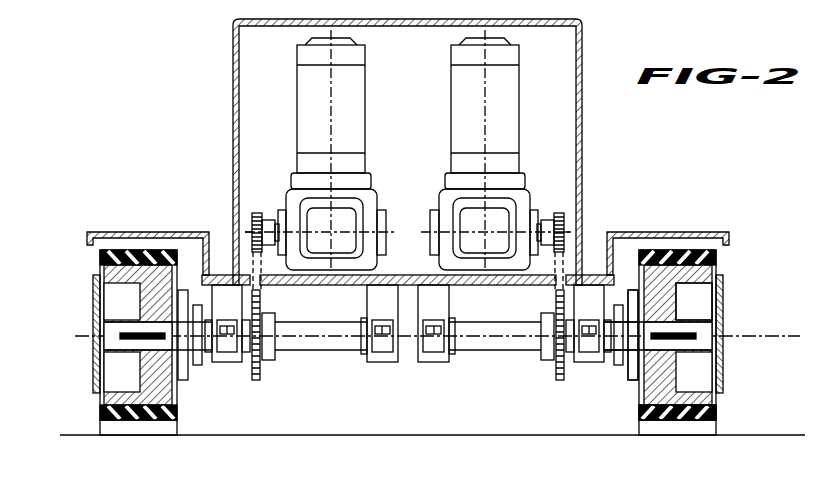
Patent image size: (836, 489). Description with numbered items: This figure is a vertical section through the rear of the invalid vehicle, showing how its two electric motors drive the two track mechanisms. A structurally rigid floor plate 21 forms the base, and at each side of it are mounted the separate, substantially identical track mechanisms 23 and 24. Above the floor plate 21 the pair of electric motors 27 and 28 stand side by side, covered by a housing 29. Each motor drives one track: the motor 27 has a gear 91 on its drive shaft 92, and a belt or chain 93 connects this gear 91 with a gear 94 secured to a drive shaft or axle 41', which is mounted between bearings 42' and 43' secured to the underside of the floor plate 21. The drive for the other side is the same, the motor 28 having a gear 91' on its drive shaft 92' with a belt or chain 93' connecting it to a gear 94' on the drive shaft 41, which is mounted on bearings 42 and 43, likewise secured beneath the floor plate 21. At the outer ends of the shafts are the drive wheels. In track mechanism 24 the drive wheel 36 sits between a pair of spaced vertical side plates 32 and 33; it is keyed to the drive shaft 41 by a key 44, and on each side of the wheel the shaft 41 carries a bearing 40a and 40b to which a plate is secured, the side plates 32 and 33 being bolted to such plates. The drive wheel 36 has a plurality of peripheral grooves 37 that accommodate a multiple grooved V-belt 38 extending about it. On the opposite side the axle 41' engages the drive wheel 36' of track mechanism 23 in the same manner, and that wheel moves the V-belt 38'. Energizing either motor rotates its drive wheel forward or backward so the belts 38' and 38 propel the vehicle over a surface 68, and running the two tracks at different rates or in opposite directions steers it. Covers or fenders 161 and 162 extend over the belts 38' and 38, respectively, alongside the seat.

The floor plate 21 is at (336, 286).
The track mechanism 23 is at (92, 322).
The track mechanism 24 is at (745, 293).
The electric motor 27 is at (297, 116).
The electric motor 28 is at (450, 104).
The housing 29 is at (233, 92).
The side plate 32 is at (636, 400).
The side plate 33 is at (724, 364).
The drive wheel 36 is at (748, 339).
The drive wheel 36' is at (65, 349).
The peripheral grooves 37 is at (676, 430).
The V-belt 38 is at (709, 419).
The V-belt 38' is at (160, 446).
The bearing 40a is at (632, 376).
The bearing 40b is at (706, 306).
The drive shaft 41 is at (495, 355).
The drive shaft or axle 41' is at (321, 355).
The bearing 42 is at (433, 344).
The bearing 42' is at (364, 344).
The bearing 43 is at (588, 344).
The bearing 43' is at (221, 351).
The key 44 is at (696, 330).
The surface 68 is at (348, 436).
The gear 91 is at (580, 211).
The gear 91' is at (234, 211).
The drive shaft 92 is at (550, 209).
The drive shaft 92' is at (271, 212).
The belt or chain 93 is at (527, 281).
The belt or chain 93' is at (225, 248).
The gear 94 is at (545, 352).
The gear 94' is at (262, 361).
The cover or fender 161 is at (142, 232).
The cover or fender 162 is at (694, 232).